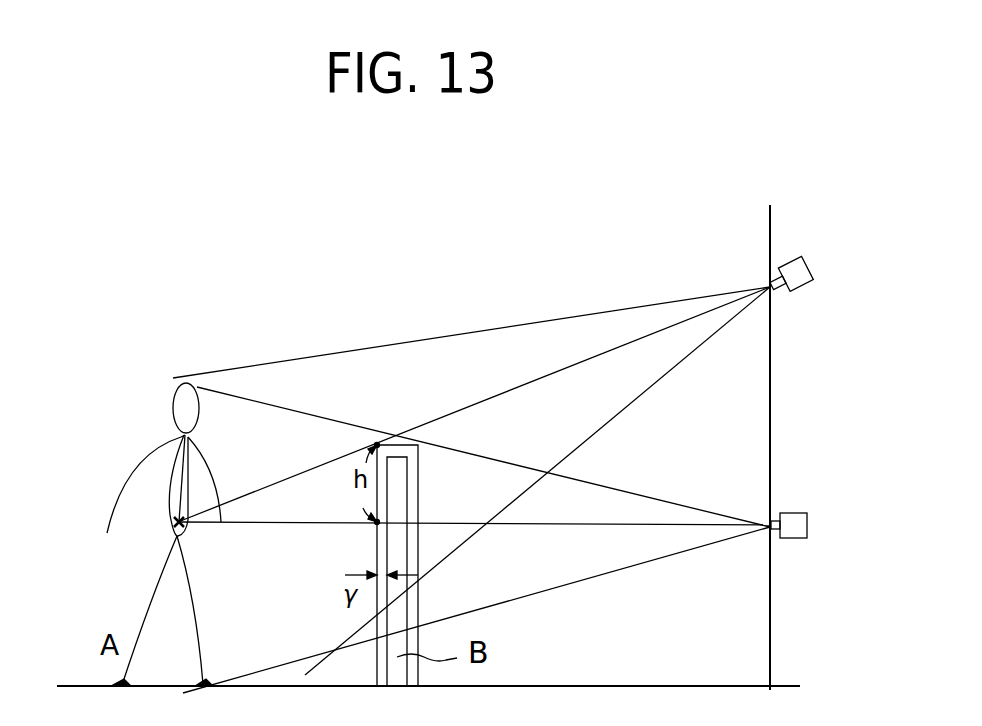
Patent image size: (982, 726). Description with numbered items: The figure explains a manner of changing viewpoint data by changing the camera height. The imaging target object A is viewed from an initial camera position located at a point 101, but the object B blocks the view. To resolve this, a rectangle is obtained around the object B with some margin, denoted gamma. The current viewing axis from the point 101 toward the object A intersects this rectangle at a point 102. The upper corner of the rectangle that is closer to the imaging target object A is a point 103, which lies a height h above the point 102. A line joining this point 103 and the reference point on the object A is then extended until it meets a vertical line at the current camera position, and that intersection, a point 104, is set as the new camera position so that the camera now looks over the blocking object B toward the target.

The initial camera position point 101 is at (800, 532).
The intersection point of viewing axis and rectangle 102 is at (366, 516).
The upper corner point of rectangle 103 is at (366, 443).
The new camera position point 104 is at (803, 278).